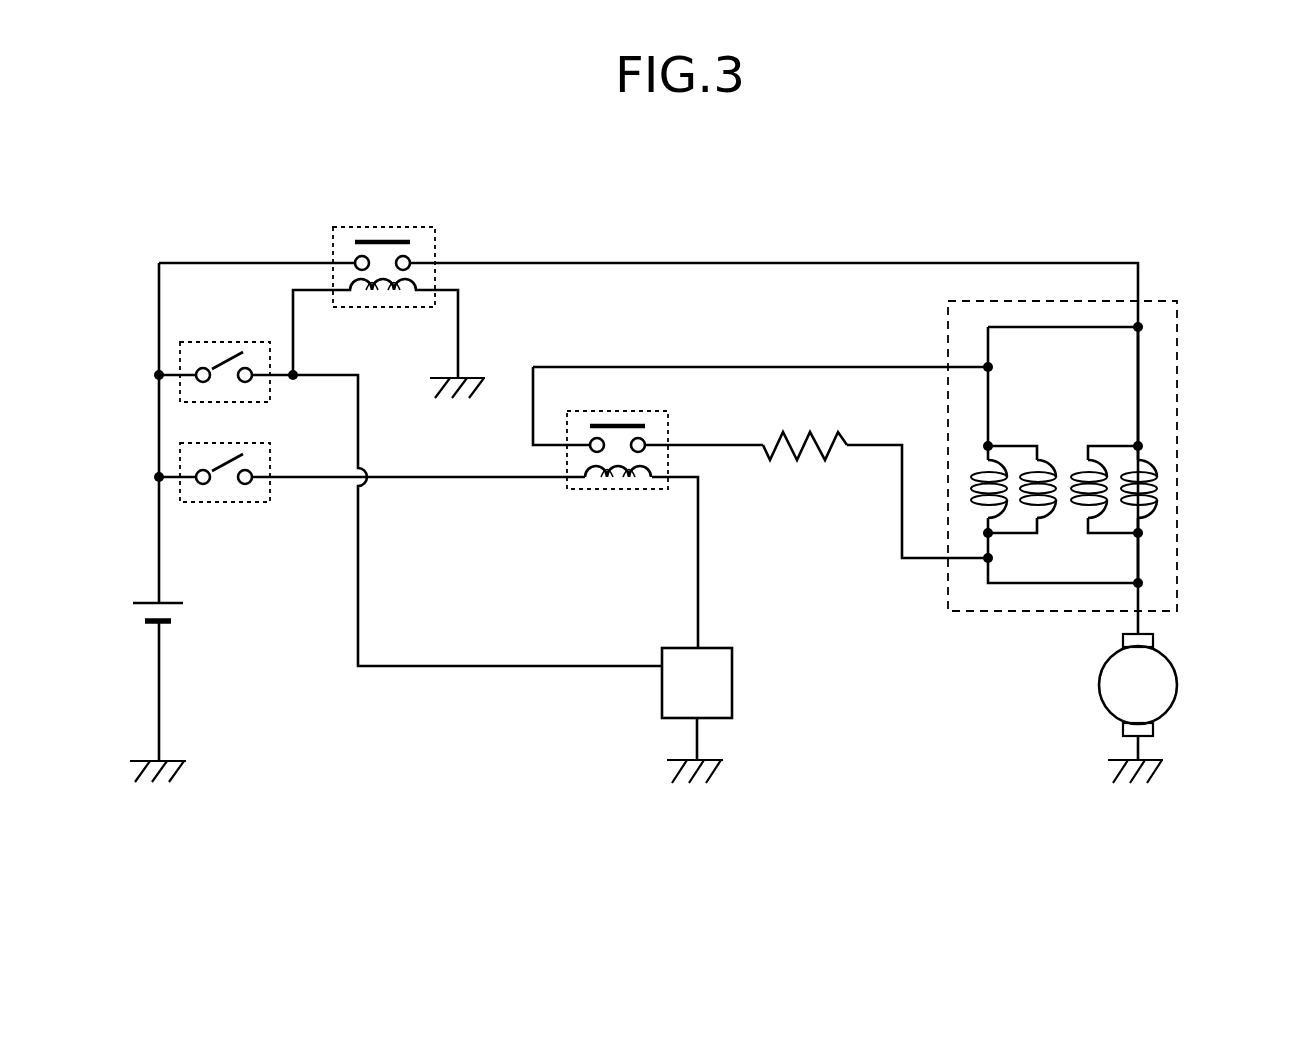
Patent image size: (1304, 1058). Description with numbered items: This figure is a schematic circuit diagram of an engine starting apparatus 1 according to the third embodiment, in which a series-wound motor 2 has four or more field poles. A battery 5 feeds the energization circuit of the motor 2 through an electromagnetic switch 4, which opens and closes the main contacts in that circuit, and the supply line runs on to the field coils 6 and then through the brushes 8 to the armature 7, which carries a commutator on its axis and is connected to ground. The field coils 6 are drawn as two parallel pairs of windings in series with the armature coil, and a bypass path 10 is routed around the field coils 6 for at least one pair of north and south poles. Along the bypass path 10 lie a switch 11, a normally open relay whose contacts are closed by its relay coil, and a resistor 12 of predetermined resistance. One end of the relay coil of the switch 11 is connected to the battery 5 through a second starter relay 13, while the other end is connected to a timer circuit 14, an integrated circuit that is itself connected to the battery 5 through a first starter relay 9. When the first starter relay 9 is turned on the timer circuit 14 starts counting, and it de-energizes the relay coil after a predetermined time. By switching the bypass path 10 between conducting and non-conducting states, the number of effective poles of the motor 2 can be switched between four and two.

The motor drive circuit 1 is at (817, 212).
The motor 2 is at (1180, 658).
The electromagnetic switch 4 is at (410, 227).
The battery 5 is at (139, 613).
The field coils 6 is at (1177, 575).
The armature 7 is at (1164, 685).
The brushes 8 is at (1153, 640).
The first starter relay 9 is at (218, 365).
The bypass path 10 is at (617, 367).
The switch 11 is at (668, 427).
The resistor 12 is at (817, 462).
The second starter relay 13 is at (217, 465).
The timer circuit 14 is at (662, 695).